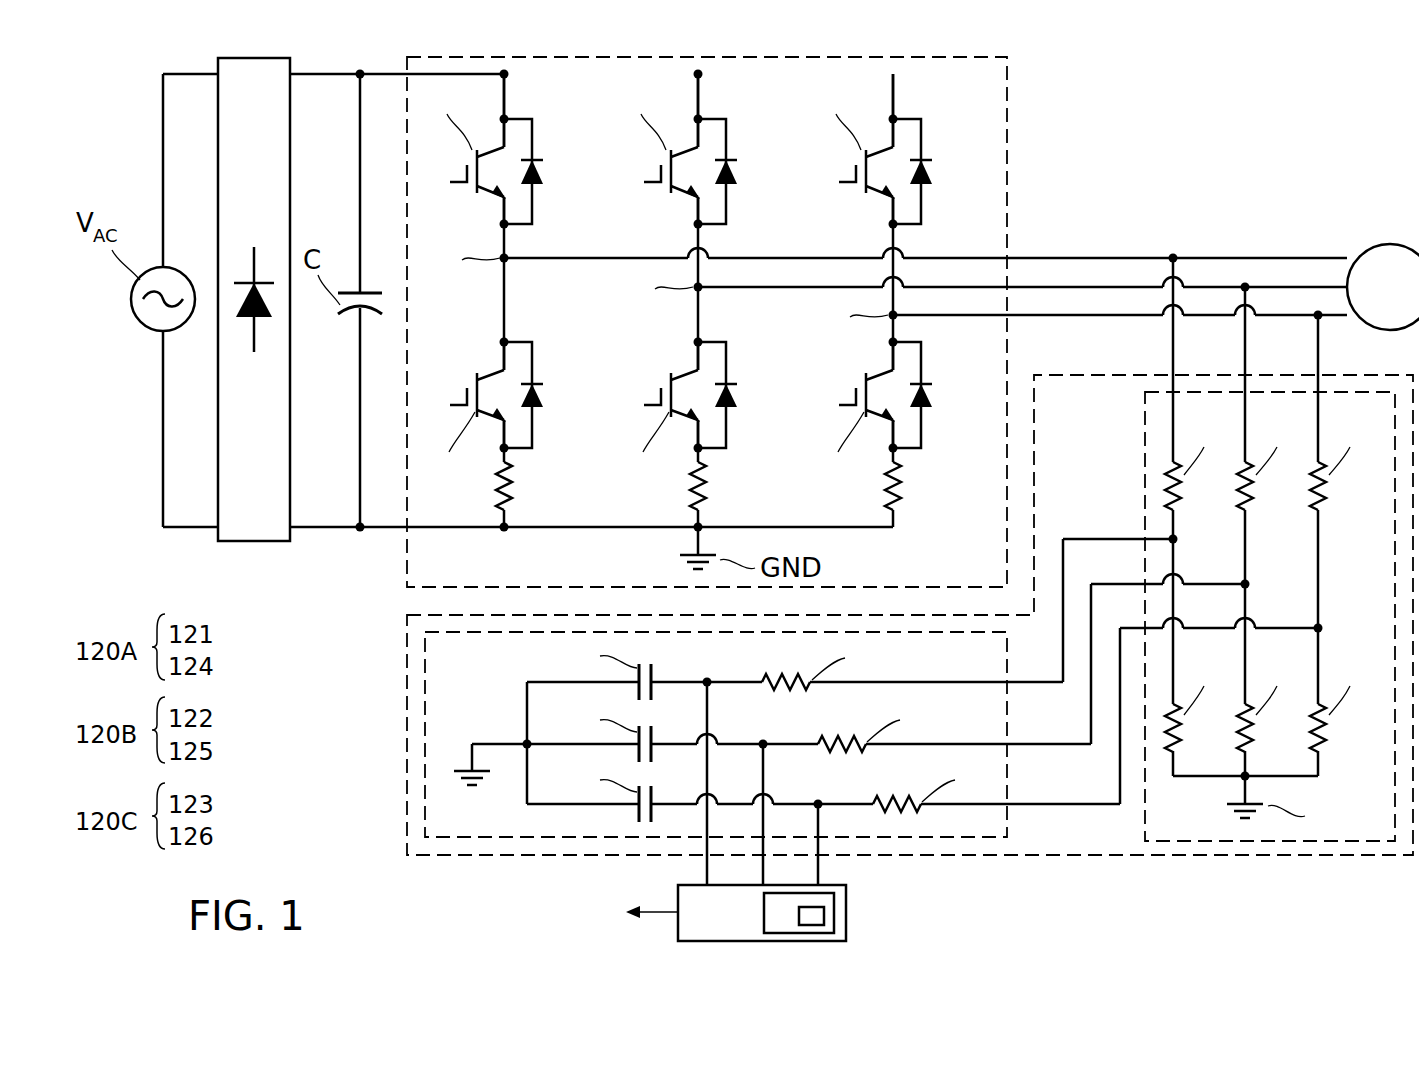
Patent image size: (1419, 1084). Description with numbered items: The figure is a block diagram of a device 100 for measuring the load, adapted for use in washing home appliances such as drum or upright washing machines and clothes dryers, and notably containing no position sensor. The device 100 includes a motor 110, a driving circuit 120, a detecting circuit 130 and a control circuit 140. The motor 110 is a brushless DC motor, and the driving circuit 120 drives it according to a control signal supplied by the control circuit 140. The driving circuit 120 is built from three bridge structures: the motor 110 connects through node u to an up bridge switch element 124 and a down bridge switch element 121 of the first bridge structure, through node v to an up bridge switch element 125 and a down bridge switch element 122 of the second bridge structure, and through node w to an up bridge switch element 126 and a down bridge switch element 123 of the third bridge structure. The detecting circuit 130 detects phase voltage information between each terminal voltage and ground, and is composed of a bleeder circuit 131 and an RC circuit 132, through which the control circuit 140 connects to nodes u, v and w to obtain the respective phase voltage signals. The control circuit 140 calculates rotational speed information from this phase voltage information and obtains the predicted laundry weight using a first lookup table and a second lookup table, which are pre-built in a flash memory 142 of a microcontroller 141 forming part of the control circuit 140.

The device 100 is at (1410, 108).
The motor 110 is at (1387, 243).
The driving circuit 120 is at (1010, 122).
The down bridge switch element 121 is at (546, 392).
The down bridge switch element 122 is at (740, 392).
The down bridge switch element 123 is at (935, 392).
The up bridge switch element 124 is at (546, 168).
The up bridge switch element 125 is at (740, 168).
The up bridge switch element 126 is at (935, 168).
The detecting circuit 130 is at (405, 738).
The bleeder circuit 131 is at (1145, 430).
The RC circuit 132 is at (1007, 822).
The control circuit 140 is at (764, 813).
The microcontroller 141 is at (835, 898).
The flash memory 142 is at (825, 921).